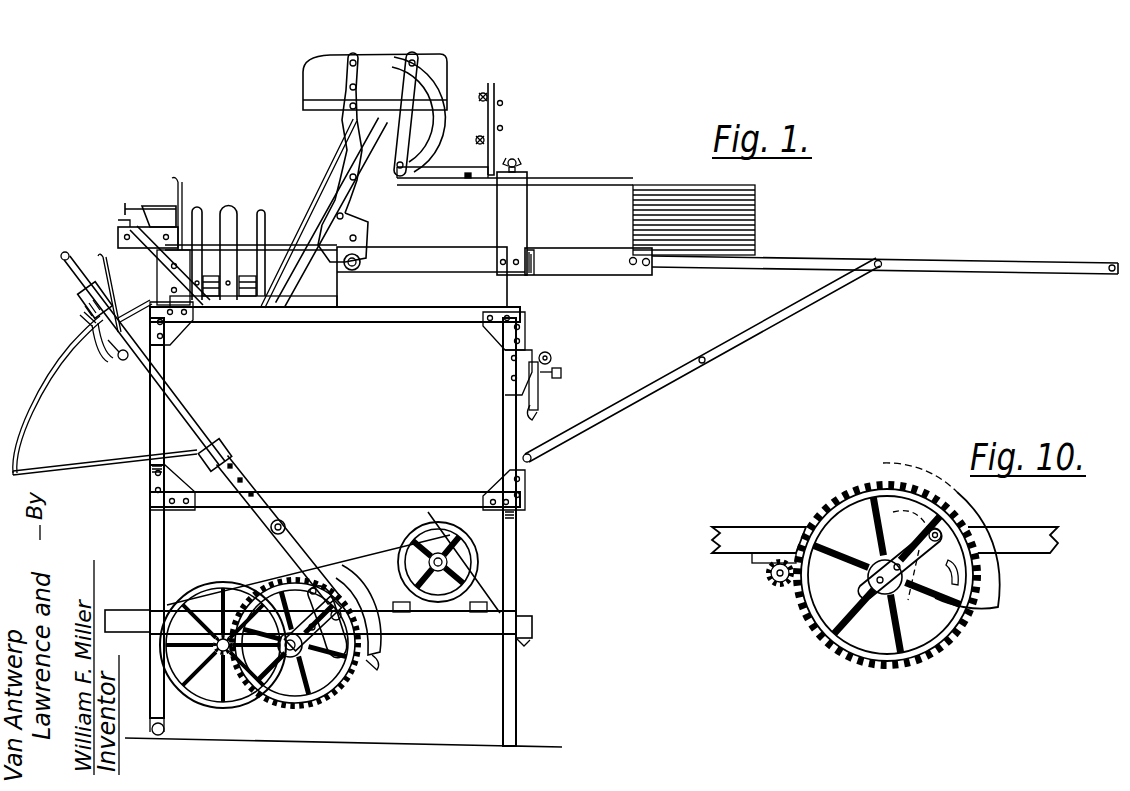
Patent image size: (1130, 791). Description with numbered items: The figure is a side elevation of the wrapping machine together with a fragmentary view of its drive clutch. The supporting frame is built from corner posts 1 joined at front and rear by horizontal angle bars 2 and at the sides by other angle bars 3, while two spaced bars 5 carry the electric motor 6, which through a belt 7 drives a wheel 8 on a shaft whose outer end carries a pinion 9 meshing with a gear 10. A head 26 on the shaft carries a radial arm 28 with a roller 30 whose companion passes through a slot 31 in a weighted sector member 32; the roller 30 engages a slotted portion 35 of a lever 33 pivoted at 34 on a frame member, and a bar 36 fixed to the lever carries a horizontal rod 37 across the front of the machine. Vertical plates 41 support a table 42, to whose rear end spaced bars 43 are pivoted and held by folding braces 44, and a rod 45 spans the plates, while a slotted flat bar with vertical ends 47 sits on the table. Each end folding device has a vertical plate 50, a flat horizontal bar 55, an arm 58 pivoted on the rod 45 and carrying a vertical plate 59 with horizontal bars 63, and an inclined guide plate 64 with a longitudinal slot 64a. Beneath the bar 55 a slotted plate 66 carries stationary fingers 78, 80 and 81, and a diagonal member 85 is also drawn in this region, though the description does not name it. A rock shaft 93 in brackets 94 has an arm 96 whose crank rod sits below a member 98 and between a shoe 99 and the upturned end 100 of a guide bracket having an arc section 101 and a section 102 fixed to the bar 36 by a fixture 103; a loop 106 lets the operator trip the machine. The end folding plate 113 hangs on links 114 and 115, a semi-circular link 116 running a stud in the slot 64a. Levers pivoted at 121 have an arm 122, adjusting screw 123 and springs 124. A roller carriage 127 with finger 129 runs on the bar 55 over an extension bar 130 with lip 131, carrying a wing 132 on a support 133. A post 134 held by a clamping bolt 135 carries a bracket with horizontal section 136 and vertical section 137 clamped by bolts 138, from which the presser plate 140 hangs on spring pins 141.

In FIG. 1, the corner posts 1 is at (150, 523).
In FIG. 1, the horizontal angle bars 2 is at (143, 633).
In FIG. 1, the side angle bars 3 is at (354, 322).
In FIG. 1, the bars 5 is at (443, 636).
In FIG. 10, the bars 5 is at (738, 533).
In FIG. 1, the electric motor 6 is at (405, 530).
In FIG. 1, the belt 7 is at (333, 562).
In FIG. 1, the wheel 8 is at (227, 704).
In FIG. 1, the pinion 9 is at (220, 654).
In FIG. 10, the pinion 9 is at (778, 588).
In FIG. 1, the gear 10 is at (326, 702).
In FIG. 10, the gear 10 is at (823, 638).
In FIG. 10, the head 26 is at (886, 604).
In FIG. 1, the arm 28 is at (330, 582).
In FIG. 10, the arm 28 is at (918, 556).
In FIG. 1, the roller 30 is at (313, 663).
In FIG. 10, the roller 30 is at (944, 538).
In FIG. 1, the slot 31 is at (342, 612).
In FIG. 10, the slot 31 is at (957, 574).
In FIG. 1, the weighted sector member 32 is at (376, 644).
In FIG. 10, the weighted sector member 32 is at (998, 588).
In FIG. 1, the lever 33 is at (283, 549).
In FIG. 1, the pivot 34 is at (286, 527).
In FIG. 1, the slotted portion 35 is at (378, 662).
In FIG. 1, the bar 36 is at (182, 408).
In FIG. 1, the horizontal rod 37 is at (60, 257).
In FIG. 1, the vertical plate 41 is at (428, 313).
In FIG. 1, the table 42 is at (478, 258).
In FIG. 1, the bars 43 is at (918, 272).
In FIG. 1, the folding braces 44 is at (682, 378).
In FIG. 1, the rod 45 is at (354, 271).
In FIG. 1, the vertical ends 47 is at (516, 215).
In FIG. 1, the vertical plate 50 is at (186, 325).
In FIG. 1, the flat horizontal bar 55 is at (272, 245).
In FIG. 1, the arm 58 is at (343, 228).
In FIG. 1, the vertical plate 59 is at (558, 252).
In FIG. 1, the horizontal bars 63 is at (673, 198).
In FIG. 1, the guide plate 64 is at (343, 148).
In FIG. 1, the longitudinal slot 64a is at (345, 157).
In FIG. 1, the slotted plate 66 is at (242, 293).
In FIG. 1, the vertical finger 78 is at (265, 214).
In FIG. 1, the vertical finger 80 is at (197, 208).
In FIG. 1, the vertical finger 81 is at (229, 210).
In FIG. 1, the diagonal bar 85 is at (167, 270).
In FIG. 1, the rock shaft 93 is at (122, 362).
In FIG. 1, the brackets 94 is at (163, 358).
In FIG. 1, the second arm 96 is at (100, 353).
In FIG. 1, the member 98 is at (78, 302).
In FIG. 1, the shoe 99 is at (132, 318).
In FIG. 1, the upturned end 100 is at (80, 323).
In FIG. 1, the arc shaped section 101 is at (45, 393).
In FIG. 1, the section 102 is at (102, 458).
In FIG. 1, the securing fixture 103 is at (226, 446).
In FIG. 1, the loop 106 is at (101, 267).
In FIG. 1, the end folding plate 113 is at (370, 57).
In FIG. 1, the link 114 is at (412, 145).
In FIG. 1, the link 115 is at (361, 139).
In FIG. 1, the semi-circular link 116 is at (433, 118).
In FIG. 1, the pivot 121 is at (548, 354).
In FIG. 1, the arm 122 is at (540, 393).
In FIG. 1, the adjusting screw 123 is at (562, 371).
In FIG. 1, the compression springs 124 is at (528, 413).
In FIG. 1, the roller carriage 127 is at (120, 220).
In FIG. 1, the finger 129 is at (178, 180).
In FIG. 1, the extension bar 130 is at (151, 277).
In FIG. 1, the upturned lip 131 is at (115, 242).
In FIG. 1, the metal wing 132 is at (148, 205).
In FIG. 1, the support 133 is at (163, 200).
In FIG. 1, the vertical flat post 134 is at (497, 132).
In FIG. 1, the clamping bolt 135 is at (522, 165).
In FIG. 1, the horizontal section 136 is at (440, 177).
In FIG. 1, the vertical section 137 is at (495, 120).
In FIG. 1, the clamping bolts 138 is at (478, 135).
In FIG. 1, the presser plate 140 is at (448, 190).
In FIG. 1, the pins 141 is at (463, 182).